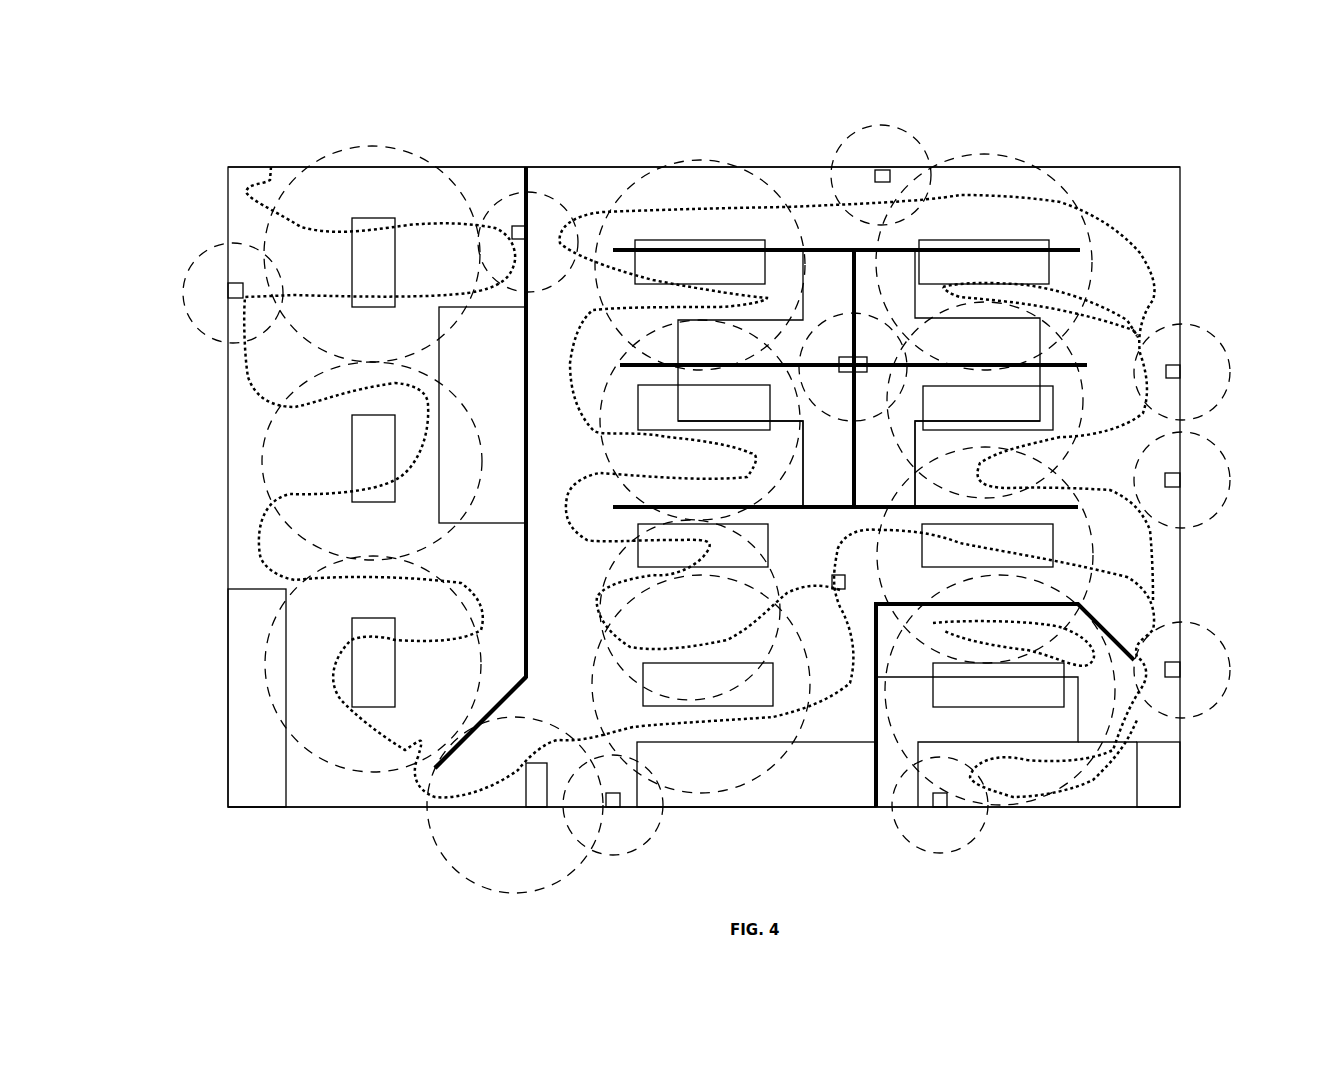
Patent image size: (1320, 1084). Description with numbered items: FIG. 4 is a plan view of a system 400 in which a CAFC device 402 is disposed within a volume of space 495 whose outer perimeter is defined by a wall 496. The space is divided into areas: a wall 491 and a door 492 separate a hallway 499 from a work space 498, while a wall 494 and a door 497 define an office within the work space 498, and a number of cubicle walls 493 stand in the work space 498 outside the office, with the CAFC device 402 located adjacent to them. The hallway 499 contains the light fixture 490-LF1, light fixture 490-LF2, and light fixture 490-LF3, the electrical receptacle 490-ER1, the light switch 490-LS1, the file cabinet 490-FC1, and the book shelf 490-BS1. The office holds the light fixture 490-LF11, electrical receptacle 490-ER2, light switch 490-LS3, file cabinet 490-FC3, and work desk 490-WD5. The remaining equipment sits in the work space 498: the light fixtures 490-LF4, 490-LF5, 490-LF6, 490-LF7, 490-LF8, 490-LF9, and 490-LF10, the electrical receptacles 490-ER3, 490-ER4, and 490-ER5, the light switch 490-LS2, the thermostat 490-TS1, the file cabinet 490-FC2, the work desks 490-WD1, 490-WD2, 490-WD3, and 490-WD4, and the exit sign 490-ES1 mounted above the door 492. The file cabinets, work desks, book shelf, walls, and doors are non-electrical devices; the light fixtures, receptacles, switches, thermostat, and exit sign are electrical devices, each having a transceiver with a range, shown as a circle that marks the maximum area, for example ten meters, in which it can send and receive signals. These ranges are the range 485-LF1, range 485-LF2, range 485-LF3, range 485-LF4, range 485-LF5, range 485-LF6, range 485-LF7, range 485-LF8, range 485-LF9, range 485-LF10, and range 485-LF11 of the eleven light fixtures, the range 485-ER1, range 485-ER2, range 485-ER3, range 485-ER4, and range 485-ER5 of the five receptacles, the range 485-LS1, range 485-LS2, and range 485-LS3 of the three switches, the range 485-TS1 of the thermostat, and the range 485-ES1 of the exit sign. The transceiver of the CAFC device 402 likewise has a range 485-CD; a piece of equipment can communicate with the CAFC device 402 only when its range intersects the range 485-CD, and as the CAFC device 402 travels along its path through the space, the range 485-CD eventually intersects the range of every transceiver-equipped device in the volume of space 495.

The system 400 is at (745, 437).
The CAFC device 402 is at (873, 562).
The wall 491 is at (513, 467).
The door 492 is at (480, 729).
The cubicle walls 493 is at (889, 223).
The wall 494 is at (845, 572).
The volume of space 495 is at (682, 832).
The wall 496 is at (714, 158).
The door 497 is at (1016, 701).
The work space 498 is at (820, 378).
The hallway 499 is at (377, 487).
The light fixture 490-LF1 is at (266, 246).
The light fixture 490-LF2 is at (266, 458).
The light fixture 490-LF3 is at (271, 661).
The light fixture 490-LF4 is at (708, 684).
The light fixture 490-LF5 is at (703, 545).
The light fixture 490-LF6 is at (655, 422).
The light fixture 490-LF7 is at (700, 262).
The light fixture 490-LF8 is at (984, 262).
The light fixture 490-LF9 is at (1092, 353).
The light fixture 490-LF10 is at (987, 545).
The light fixture 490-LF11 is at (998, 685).
The electrical receptacle 490-ER1 is at (185, 308).
The electrical receptacle 490-ER2 is at (1012, 832).
The electrical receptacle 490-ER3 is at (765, 294).
The electrical receptacle 490-ER4 is at (791, 145).
The electrical receptacle 490-ER5 is at (1222, 455).
The light switch 490-LS1 is at (561, 207).
The light switch 490-LS2 is at (662, 837).
The light switch 490-LS3 is at (1222, 645).
The file cabinet 490-FC1 is at (422, 415).
The file cabinet 490-FC2 is at (756, 808).
The file cabinet 490-FC3 is at (1208, 766).
The thermostat 490-TS1 is at (1222, 348).
The exit sign 490-ES1 is at (432, 804).
The book shelf 490-BS1 is at (207, 698).
The work desk 490-WD1 is at (740, 464).
The work desk 490-WD2 is at (707, 378).
The work desk 490-WD3 is at (1107, 375).
The work desk 490-WD4 is at (977, 464).
The work desk 490-WD5 is at (1033, 712).
The range 485-LF1 is at (388, 249).
The range 485-LF2 is at (307, 459).
The range 485-LF3 is at (316, 658).
The range 485-LF4 is at (743, 709).
The range 485-LF5 is at (663, 610).
The range 485-LF6 is at (670, 418).
The range 485-LF7 is at (661, 235).
The range 485-LF8 is at (994, 245).
The range 485-LF9 is at (1088, 348).
The range 485-LF10 is at (1070, 555).
The range 485-LF11 is at (1025, 711).
The range 485-ER1 is at (195, 286).
The range 485-ER2 is at (991, 830).
The range 485-ER3 is at (793, 305).
The range 485-ER4 is at (925, 161).
The range 485-ER5 is at (1219, 480).
The range 485-LS1 is at (558, 219).
The range 485-LS2 is at (575, 814).
The range 485-LS3 is at (1215, 647).
The range 485-TS1 is at (1219, 372).
The range 485-ES1 is at (450, 805).
The range 485-CD is at (1006, 742).